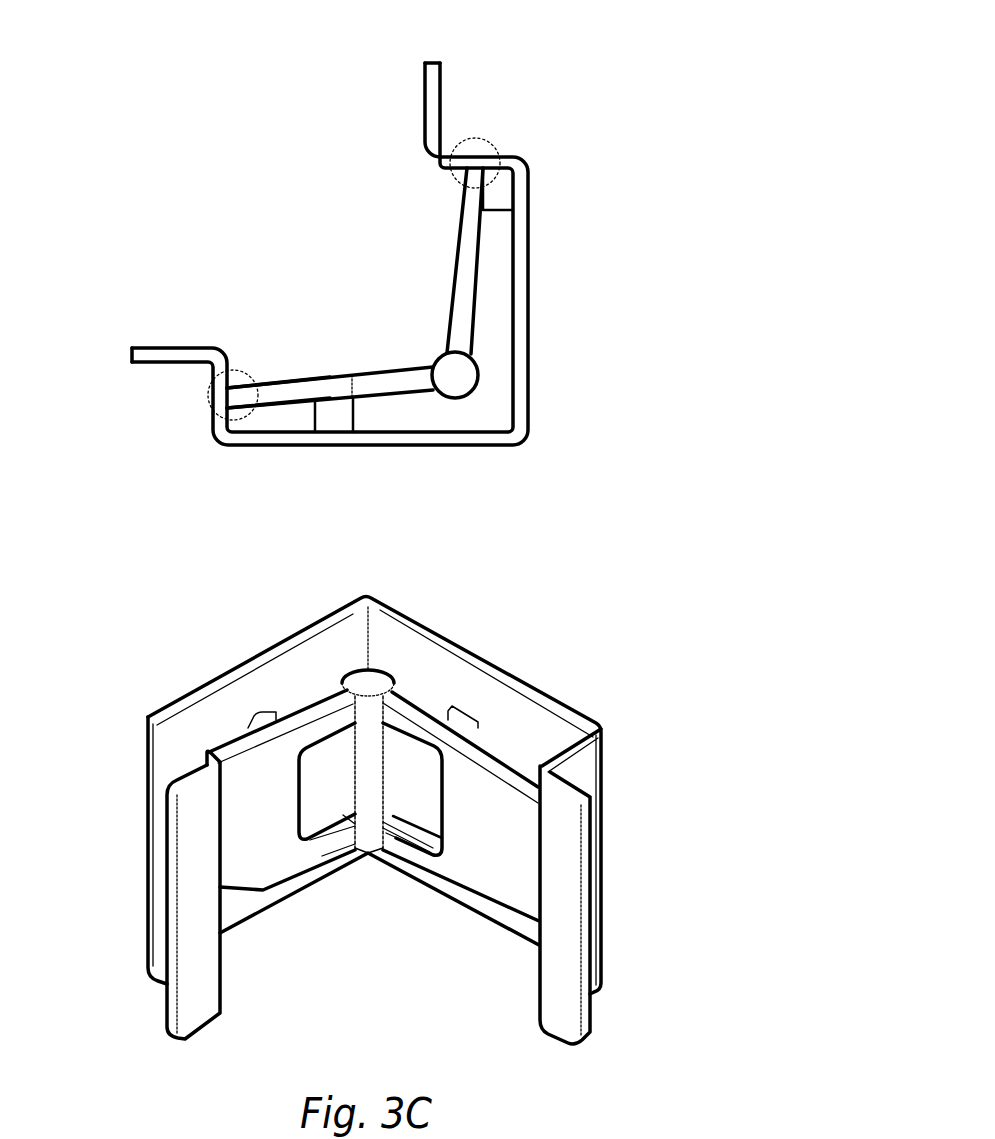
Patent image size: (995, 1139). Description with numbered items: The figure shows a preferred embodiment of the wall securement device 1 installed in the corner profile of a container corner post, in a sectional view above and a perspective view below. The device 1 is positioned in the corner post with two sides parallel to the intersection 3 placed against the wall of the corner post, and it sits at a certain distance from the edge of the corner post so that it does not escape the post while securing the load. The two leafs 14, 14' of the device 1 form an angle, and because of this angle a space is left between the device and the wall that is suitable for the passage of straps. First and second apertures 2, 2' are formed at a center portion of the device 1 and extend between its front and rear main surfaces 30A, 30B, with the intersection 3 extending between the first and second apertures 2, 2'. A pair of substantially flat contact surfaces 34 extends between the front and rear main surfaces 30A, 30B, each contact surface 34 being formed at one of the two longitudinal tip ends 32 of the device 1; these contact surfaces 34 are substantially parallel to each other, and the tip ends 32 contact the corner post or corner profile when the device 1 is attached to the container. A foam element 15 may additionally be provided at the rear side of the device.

The wall securement device 1 is at (390, 213).
The first aperture 2 is at (406, 880).
The second aperture 2' is at (338, 879).
The intersection 3 is at (455, 374).
The leaf 14 is at (390, 678).
The leaf 14' is at (471, 579).
The foam element 15 is at (493, 197).
The front main surface 30A is at (287, 382).
The rear main surface 30B is at (285, 393).
The tip end 32 is at (482, 141).
The contact surface 34 is at (482, 166).